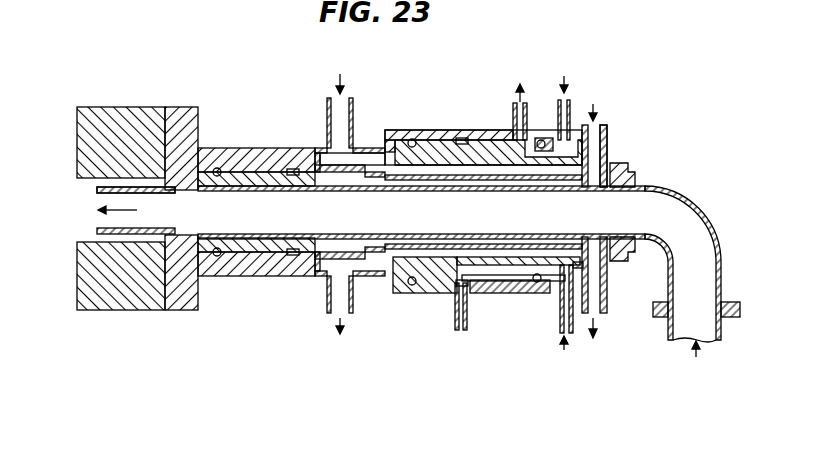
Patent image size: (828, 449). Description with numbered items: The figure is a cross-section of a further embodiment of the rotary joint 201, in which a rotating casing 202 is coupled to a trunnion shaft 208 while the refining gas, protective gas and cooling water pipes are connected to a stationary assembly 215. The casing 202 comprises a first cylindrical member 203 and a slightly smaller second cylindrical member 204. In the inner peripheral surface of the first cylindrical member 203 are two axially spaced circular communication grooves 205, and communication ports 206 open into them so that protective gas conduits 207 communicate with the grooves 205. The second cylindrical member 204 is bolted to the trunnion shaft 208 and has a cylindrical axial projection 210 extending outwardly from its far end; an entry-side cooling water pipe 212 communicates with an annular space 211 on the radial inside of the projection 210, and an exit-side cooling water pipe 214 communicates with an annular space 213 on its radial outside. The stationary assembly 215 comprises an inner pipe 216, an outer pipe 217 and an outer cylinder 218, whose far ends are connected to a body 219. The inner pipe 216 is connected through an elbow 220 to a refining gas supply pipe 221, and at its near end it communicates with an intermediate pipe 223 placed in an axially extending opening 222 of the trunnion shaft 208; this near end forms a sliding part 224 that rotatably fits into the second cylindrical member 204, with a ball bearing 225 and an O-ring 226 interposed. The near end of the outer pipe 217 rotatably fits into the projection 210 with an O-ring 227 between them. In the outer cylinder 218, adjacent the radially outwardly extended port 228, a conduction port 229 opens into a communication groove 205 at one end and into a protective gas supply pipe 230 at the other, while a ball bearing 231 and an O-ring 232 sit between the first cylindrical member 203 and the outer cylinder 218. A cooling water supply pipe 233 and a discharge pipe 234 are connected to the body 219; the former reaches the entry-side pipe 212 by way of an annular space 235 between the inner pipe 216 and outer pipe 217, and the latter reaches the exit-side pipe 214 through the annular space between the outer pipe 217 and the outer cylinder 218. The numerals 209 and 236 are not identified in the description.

The rotary joint 201 is at (468, 107).
The casing 202 is at (417, 122).
The first cylindrical member 203 is at (393, 130).
The second cylindrical member 204 is at (268, 148).
The communication grooves 205 is at (458, 137).
The communication ports 206 is at (517, 140).
The protective gas conduits 207 is at (539, 140).
The trunnion shaft 208 is at (120, 107).
The flange block 209 is at (184, 107).
The cylindrical axial projection 210 is at (343, 165).
The annular space 211 is at (338, 246).
The entry-side cooling water pipe 212 is at (327, 297).
The annular space 213 is at (330, 158).
The exit-side cooling water pipe 214 is at (328, 100).
The stationary assembly 215 is at (428, 293).
The inner pipe 216 is at (476, 234).
The outer pipe 217 is at (515, 244).
The outer cylinder 218 is at (538, 257).
The body 219 is at (618, 165).
The elbow 220 is at (655, 187).
The refining gas supply pipe 221 is at (672, 333).
The axially extending opening 222 is at (92, 187).
The intermediate pipe 223 is at (131, 200).
The sliding part 224 is at (248, 238).
The ball bearing 225 is at (217, 168).
The O-ring 226 is at (263, 165).
The O-ring 227 is at (378, 191).
The radially outwardly extended port 228 is at (600, 125).
The conduction port 229 is at (545, 135).
The protective gas supply pipe 230 is at (568, 102).
The ball bearing 231 is at (412, 147).
The O-ring 232 is at (462, 145).
The cooling water supply pipe 233 is at (606, 150).
The discharge pipe 234 is at (600, 283).
The annular space 235 is at (578, 257).
The lower end block 236 is at (596, 254).